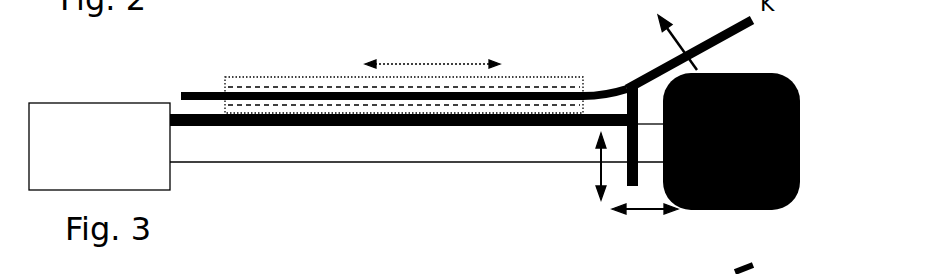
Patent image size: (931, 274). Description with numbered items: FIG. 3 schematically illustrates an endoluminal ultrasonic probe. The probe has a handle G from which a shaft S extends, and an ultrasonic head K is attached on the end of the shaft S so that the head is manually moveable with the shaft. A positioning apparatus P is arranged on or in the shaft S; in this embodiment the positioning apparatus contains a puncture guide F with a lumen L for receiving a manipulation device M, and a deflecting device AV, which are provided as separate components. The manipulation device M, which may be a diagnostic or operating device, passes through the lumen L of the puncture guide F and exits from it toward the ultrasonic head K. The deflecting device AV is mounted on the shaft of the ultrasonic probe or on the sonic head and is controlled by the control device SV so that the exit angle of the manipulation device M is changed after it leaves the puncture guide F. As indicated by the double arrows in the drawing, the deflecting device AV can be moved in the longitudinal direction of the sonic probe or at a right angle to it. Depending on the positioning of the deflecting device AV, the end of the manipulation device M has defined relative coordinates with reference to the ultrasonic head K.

The handle G is at (112, 113).
The control device SV is at (204, 115).
The lumen L is at (358, 105).
The puncture guide F is at (275, 85).
The positioning apparatus P is at (462, 55).
The shaft S is at (370, 152).
The manipulation device M is at (612, 88).
The deflecting device AV is at (633, 186).
The ultrasonic head K is at (733, 212).